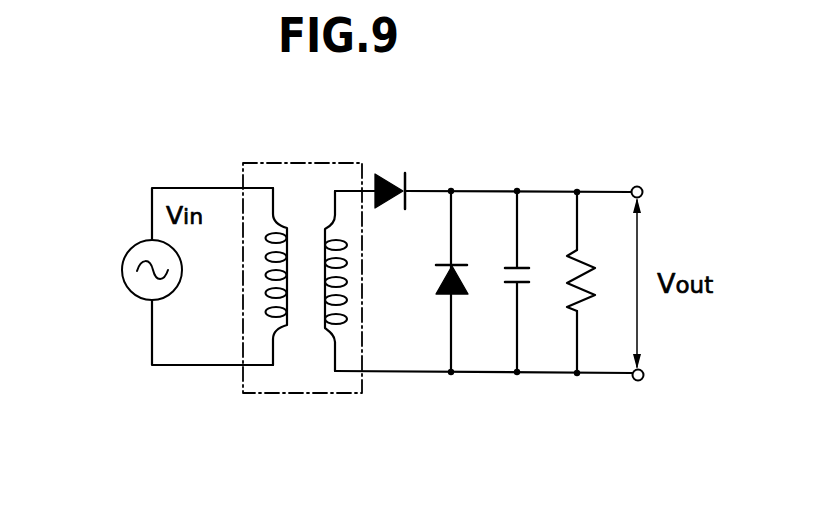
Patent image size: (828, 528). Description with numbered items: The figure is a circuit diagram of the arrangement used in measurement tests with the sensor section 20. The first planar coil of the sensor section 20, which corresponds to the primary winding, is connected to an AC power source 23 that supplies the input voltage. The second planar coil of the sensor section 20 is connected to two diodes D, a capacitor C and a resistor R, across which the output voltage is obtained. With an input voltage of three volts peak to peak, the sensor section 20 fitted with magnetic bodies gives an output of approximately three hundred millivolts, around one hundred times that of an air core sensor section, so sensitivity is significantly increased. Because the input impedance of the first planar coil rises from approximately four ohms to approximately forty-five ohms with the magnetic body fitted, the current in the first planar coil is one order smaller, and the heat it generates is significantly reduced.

The AC power source 23 is at (127, 290).
The sensor section 20 is at (309, 395).
The diode D is at (424, 316).
The capacitor C is at (528, 282).
The resistor R is at (595, 282).